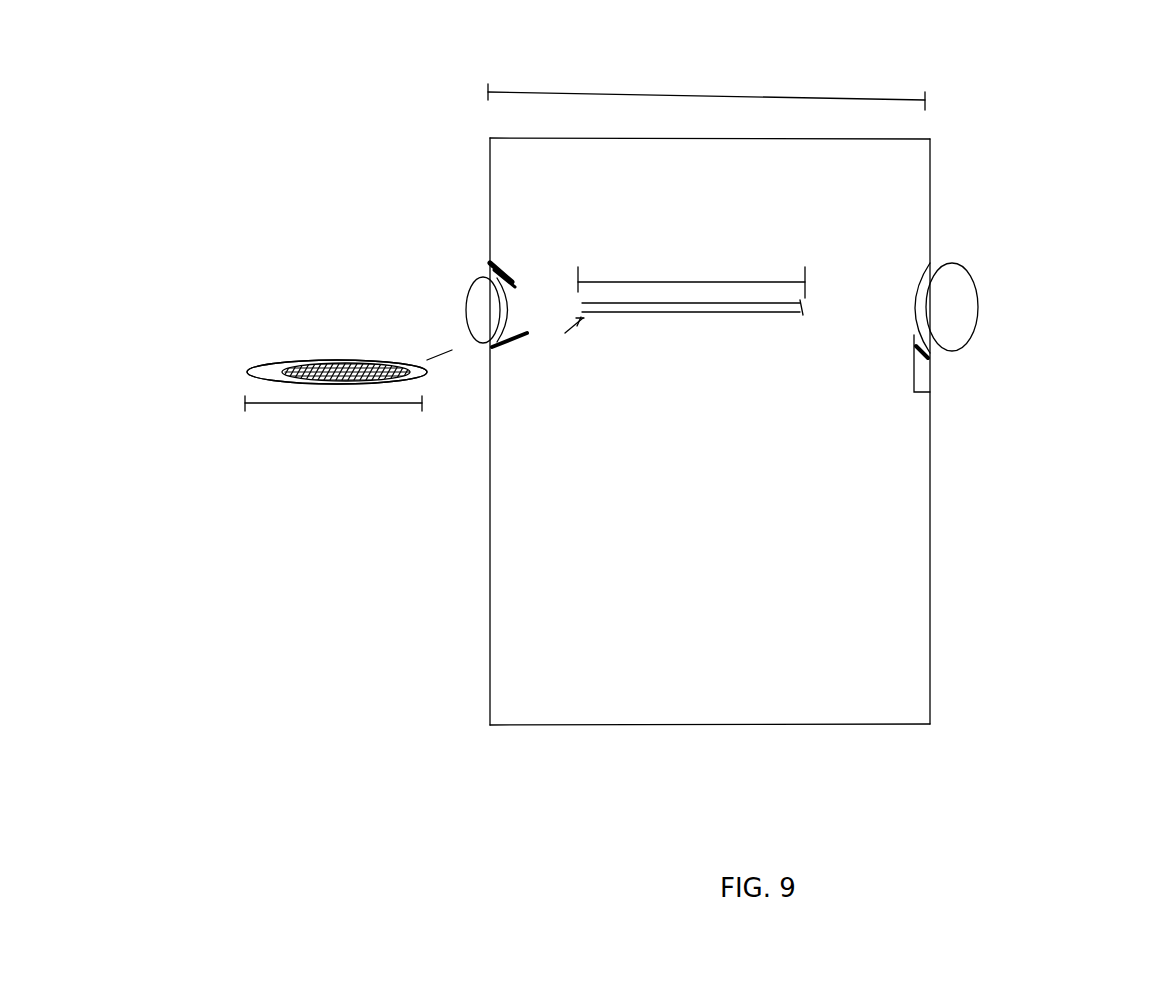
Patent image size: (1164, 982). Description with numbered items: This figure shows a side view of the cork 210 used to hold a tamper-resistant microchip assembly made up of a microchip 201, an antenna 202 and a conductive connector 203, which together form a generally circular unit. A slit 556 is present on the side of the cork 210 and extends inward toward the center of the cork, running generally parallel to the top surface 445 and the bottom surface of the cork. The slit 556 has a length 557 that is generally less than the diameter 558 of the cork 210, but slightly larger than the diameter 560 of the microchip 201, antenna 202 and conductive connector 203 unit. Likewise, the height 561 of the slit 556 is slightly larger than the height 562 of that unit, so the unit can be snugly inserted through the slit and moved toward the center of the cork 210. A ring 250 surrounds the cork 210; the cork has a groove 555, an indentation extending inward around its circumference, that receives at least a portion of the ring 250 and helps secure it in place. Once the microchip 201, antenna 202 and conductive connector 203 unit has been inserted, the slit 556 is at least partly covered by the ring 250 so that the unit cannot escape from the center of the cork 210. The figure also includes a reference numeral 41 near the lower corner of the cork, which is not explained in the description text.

The substrate 41 is at (680, 747).
The microchip 201 is at (284, 324).
The antenna 202 is at (349, 367).
The conductive connector 203 is at (349, 367).
The cork 210 is at (893, 632).
The ring 250 is at (470, 316).
The top surface 445 is at (651, 123).
The groove 555 is at (930, 391).
The slit 556 is at (803, 315).
The length of the slit 557 is at (816, 261).
The diameter of the cork 558 is at (786, 80).
The diameter of the microchip/antenna/conductive connector unit 560 is at (269, 429).
The height of the slit 561 is at (572, 298).
The height of the microchip/antenna/conductive connector unit 562 is at (235, 366).